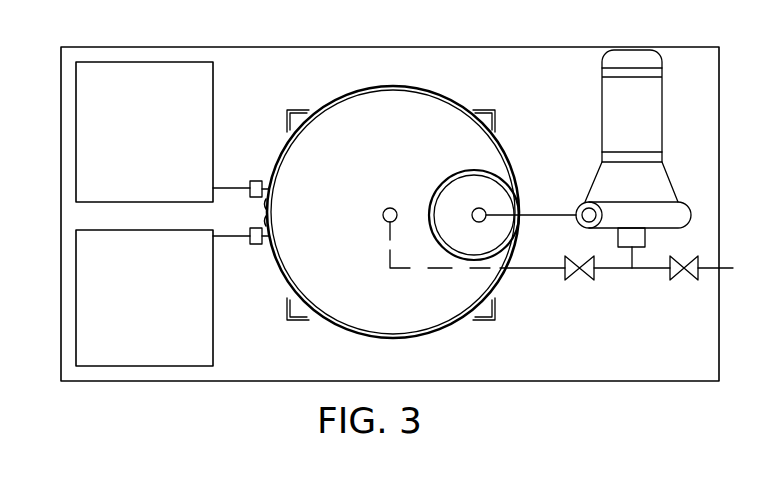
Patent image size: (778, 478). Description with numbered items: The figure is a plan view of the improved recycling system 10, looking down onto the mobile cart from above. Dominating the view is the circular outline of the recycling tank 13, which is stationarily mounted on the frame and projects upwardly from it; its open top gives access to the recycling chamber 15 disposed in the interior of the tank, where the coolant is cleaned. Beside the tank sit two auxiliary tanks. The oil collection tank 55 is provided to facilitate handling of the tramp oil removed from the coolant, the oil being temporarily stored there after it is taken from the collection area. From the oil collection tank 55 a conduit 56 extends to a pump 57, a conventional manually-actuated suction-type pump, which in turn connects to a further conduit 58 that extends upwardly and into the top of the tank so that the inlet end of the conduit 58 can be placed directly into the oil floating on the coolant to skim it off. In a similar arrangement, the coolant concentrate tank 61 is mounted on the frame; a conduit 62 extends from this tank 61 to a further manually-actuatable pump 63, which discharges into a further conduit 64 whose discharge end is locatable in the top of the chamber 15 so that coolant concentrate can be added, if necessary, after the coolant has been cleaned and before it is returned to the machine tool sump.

The recycling system 10 is at (160, 418).
The recycling tank 13 is at (437, 89).
The recycling chamber 15 is at (385, 105).
The oil collection tank 55 is at (100, 149).
The conduit 56 is at (233, 187).
The pump 57 is at (258, 181).
The conduit 58 is at (269, 208).
The coolant concentrate tank 61 is at (93, 309).
The conduit 62 is at (226, 240).
The pump 63 is at (261, 249).
The conduit 64 is at (268, 219).